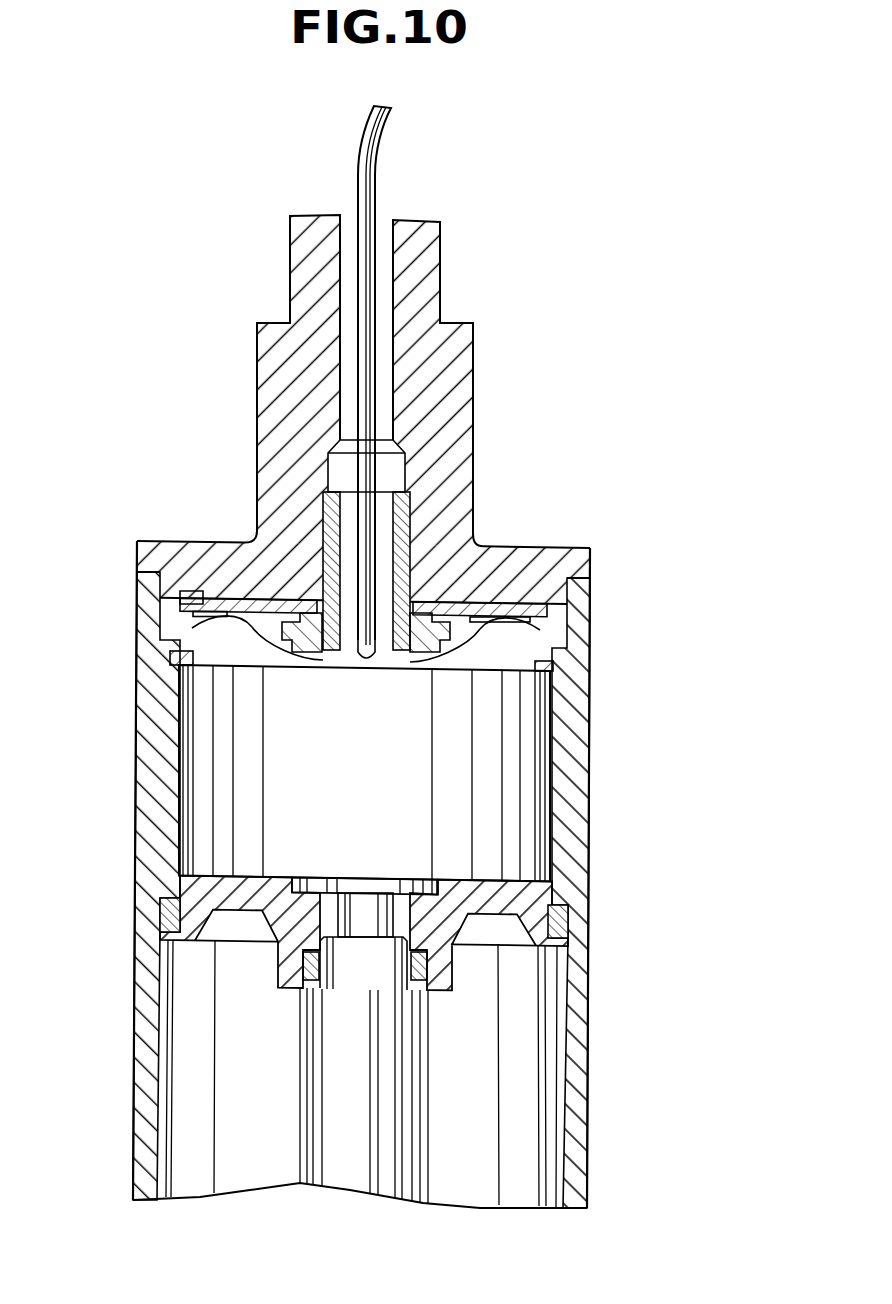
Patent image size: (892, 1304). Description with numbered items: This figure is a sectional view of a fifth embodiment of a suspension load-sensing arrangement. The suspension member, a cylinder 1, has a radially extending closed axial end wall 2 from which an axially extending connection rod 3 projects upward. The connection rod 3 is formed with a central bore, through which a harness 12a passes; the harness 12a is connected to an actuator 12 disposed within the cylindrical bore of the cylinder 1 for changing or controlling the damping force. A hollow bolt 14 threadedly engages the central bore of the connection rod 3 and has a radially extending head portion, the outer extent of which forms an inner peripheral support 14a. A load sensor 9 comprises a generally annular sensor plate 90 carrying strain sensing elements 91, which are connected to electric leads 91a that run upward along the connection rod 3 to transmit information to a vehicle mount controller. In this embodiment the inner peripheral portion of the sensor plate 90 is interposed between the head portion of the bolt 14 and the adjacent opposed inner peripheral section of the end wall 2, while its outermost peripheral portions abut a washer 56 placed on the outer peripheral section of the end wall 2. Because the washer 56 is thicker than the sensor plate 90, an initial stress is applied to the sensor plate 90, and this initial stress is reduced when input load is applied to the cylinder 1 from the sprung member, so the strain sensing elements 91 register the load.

The cylinder 1 is at (592, 897).
The closed axial end wall 2 is at (233, 537).
The connection rod 3 is at (430, 283).
The harness 12a is at (377, 194).
The inner peripheral support 14a is at (473, 600).
The sensor plate 90 is at (500, 600).
The washer 56 is at (193, 593).
The hollow bolt 14 is at (410, 650).
The strain sensing elements 91 is at (200, 627).
The load sensor 9 is at (462, 648).
The electric leads 91a is at (290, 655).
The actuator 12 is at (528, 748).